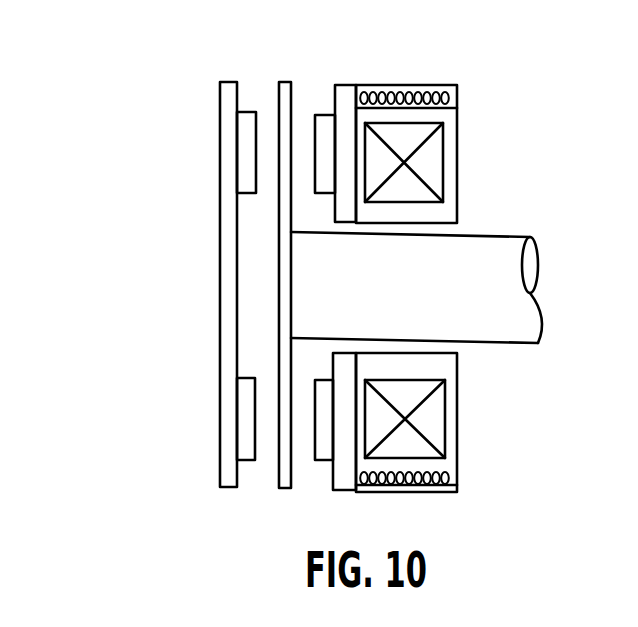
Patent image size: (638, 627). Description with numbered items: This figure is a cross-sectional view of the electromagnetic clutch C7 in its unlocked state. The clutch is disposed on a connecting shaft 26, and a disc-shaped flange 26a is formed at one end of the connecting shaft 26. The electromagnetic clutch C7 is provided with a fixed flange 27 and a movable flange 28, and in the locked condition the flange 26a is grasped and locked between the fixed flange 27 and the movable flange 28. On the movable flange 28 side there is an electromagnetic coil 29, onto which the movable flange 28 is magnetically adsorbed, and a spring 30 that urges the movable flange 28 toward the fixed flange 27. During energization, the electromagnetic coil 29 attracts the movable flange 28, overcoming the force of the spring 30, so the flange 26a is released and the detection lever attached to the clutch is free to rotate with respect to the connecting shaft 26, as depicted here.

The connecting shaft 26 is at (492, 323).
The disc-shaped flange 26a is at (287, 81).
The fixed flange 27 is at (230, 81).
The movable flange 28 is at (345, 83).
The electromagnetic coil 29 is at (433, 163).
The spring 30 is at (400, 90).
The electromagnetic clutch C7 is at (158, 194).